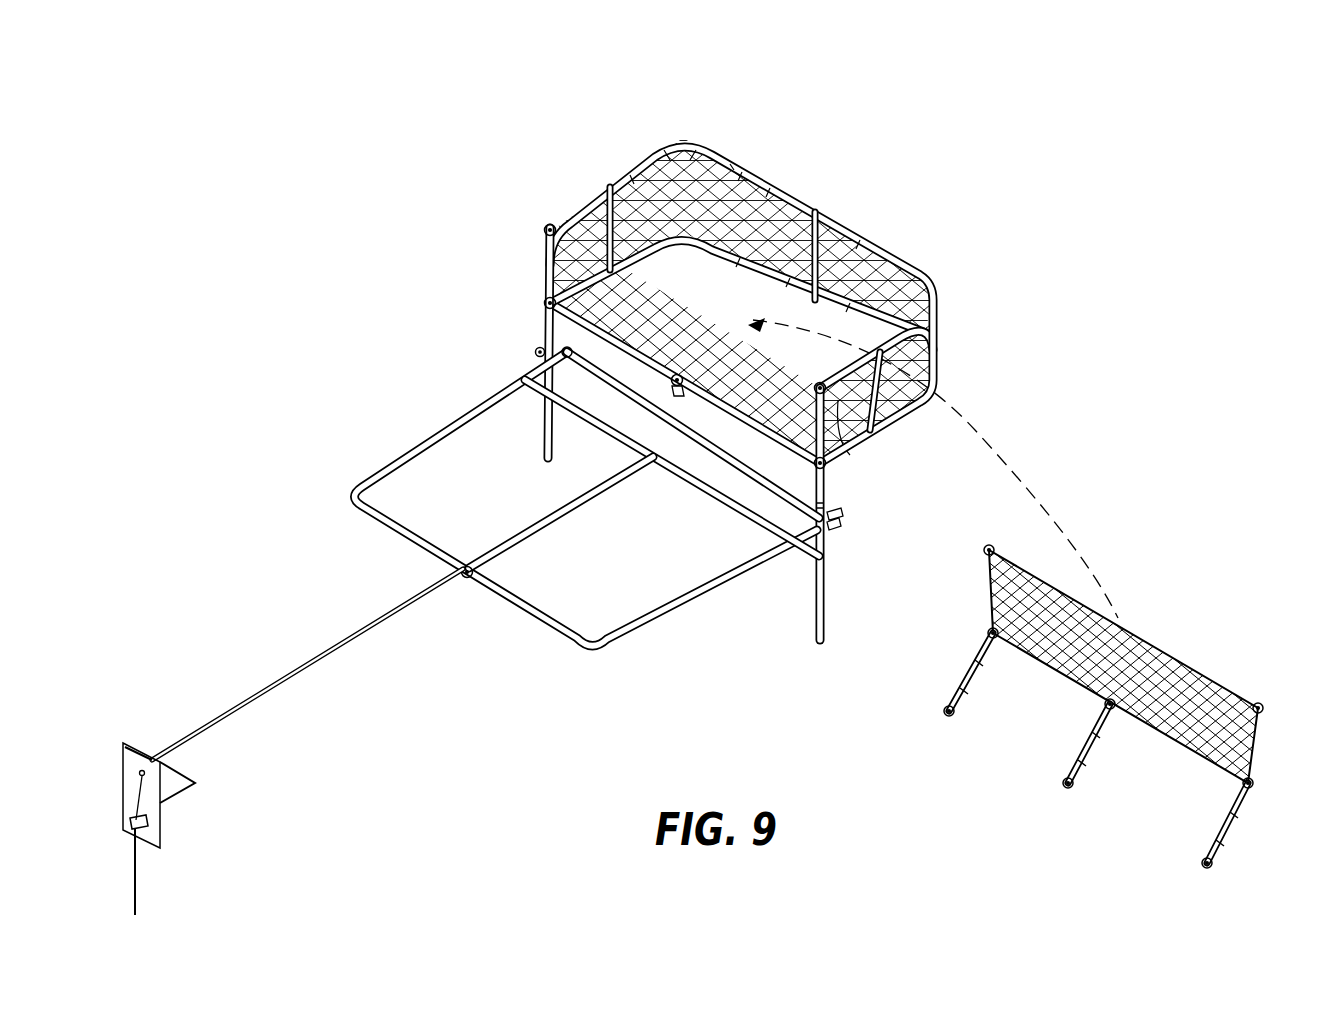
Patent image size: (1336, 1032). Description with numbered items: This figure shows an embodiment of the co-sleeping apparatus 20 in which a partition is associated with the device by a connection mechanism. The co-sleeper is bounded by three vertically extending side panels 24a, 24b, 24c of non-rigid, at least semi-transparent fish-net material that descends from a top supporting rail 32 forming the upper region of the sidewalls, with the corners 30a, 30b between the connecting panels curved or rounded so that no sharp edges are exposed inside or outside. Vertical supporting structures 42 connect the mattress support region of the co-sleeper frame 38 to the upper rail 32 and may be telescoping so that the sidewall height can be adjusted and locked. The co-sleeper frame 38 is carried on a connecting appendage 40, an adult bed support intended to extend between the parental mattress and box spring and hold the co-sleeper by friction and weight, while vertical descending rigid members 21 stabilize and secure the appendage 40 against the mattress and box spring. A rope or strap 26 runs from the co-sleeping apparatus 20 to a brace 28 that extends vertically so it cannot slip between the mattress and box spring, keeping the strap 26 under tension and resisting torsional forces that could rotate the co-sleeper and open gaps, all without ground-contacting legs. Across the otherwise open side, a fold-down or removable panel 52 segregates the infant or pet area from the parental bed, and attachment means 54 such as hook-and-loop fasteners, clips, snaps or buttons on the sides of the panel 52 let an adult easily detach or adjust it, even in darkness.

The co-sleeping apparatus 20 is at (966, 152).
The vertical descending rigid members 21 is at (543, 430).
The side panel 24a is at (645, 162).
The side panel 24b is at (897, 255).
The side panel 24c is at (928, 408).
The rope or strap 26 is at (300, 677).
The brace 28 is at (180, 816).
The corner 30a is at (684, 125).
The corner 30b is at (948, 288).
The top supporting rail 32 is at (772, 178).
The co-sleeper frame 38 is at (955, 379).
The connecting appendage 40 is at (595, 663).
The vertical supporting structures 42 is at (602, 186).
The fold-down or removable panel 52 is at (1165, 652).
The attachment means 54 is at (985, 556).